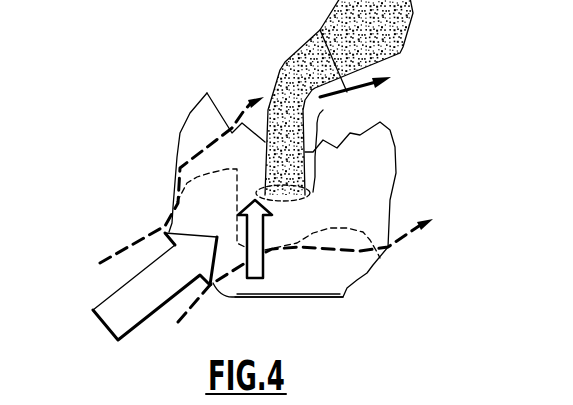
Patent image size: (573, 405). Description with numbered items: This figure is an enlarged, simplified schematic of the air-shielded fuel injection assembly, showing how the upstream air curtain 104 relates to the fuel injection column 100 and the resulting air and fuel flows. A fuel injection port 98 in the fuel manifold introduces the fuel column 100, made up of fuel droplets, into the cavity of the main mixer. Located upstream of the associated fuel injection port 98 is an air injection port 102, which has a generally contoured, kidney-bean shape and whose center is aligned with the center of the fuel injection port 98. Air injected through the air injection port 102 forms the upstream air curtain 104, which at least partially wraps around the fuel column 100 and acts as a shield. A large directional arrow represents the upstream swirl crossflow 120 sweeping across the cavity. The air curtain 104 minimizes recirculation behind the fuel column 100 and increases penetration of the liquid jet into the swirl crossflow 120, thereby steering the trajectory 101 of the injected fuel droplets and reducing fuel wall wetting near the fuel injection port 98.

The fuel injection port 98 is at (323, 110).
The fuel column 100 is at (380, 57).
The trajectory 101 is at (313, 33).
The air injection port 102 is at (339, 299).
The air curtain 104 is at (397, 178).
The upstream swirl crossflow 120 is at (107, 303).